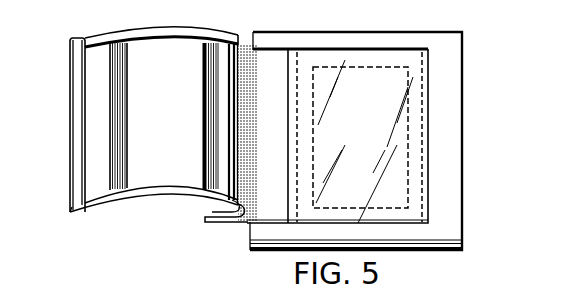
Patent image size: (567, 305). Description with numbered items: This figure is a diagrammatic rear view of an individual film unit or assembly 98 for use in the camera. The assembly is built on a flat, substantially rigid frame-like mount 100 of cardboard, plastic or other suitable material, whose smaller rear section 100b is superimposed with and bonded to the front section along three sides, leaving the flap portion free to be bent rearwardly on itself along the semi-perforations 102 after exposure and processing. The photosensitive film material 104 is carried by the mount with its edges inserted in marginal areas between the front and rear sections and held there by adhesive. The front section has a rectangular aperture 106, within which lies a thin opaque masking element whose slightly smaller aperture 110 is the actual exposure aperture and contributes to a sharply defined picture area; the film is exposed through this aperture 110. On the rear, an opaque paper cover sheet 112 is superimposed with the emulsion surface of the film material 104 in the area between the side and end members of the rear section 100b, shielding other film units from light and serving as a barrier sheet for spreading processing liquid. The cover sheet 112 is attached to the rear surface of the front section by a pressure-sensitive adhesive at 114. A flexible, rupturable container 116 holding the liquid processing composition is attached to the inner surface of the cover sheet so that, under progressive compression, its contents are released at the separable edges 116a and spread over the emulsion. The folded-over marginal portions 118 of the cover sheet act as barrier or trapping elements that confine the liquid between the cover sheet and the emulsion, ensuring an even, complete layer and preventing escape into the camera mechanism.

The film unit or assembly 98 is at (138, 127).
The frame-like mount 100 is at (404, 34).
The rear section 100b is at (447, 157).
The semi-perforations 102 is at (270, 52).
The photosensitive film material 104 is at (368, 122).
The rectangular aperture 106 is at (428, 100).
The aperture 110 is at (421, 131).
The cover sheet 112 is at (182, 102).
The pressure-sensitive adhesive 114 is at (228, 226).
The rupturable container 116 is at (222, 123).
The separable edges 116a is at (203, 144).
The folded-over marginal portions 118 is at (84, 50).